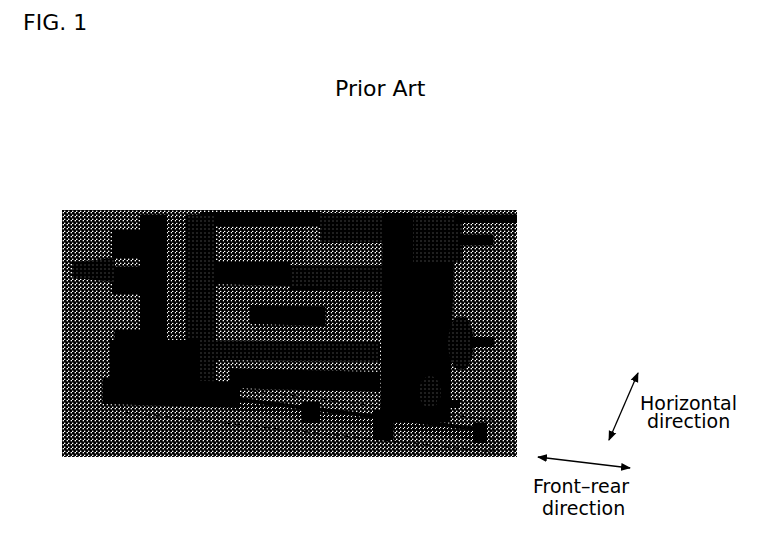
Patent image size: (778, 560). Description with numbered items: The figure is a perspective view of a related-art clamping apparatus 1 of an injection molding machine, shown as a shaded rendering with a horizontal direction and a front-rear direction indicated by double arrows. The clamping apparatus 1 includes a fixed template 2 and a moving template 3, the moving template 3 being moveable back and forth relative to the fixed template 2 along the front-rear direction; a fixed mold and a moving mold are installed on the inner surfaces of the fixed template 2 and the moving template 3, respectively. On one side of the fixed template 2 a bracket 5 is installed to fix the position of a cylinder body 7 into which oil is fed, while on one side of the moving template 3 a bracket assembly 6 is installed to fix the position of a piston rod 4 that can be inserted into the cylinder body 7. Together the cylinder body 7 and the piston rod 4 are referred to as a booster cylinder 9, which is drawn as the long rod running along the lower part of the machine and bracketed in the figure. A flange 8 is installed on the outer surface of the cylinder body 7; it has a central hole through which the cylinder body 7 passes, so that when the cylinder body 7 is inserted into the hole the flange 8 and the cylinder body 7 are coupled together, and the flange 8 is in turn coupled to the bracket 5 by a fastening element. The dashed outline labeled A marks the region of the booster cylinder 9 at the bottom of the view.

The clamping apparatus 1 is at (307, 329).
The fixed template 2 is at (455, 266).
The moving template 3 is at (115, 304).
The piston rod 4 is at (265, 403).
The bracket 5 is at (387, 433).
The bracket assembly 6 is at (150, 392).
The cylinder body 7 is at (327, 450).
The flange 8 is at (373, 433).
The booster cylinder 9 is at (302, 457).
The region A is at (452, 455).